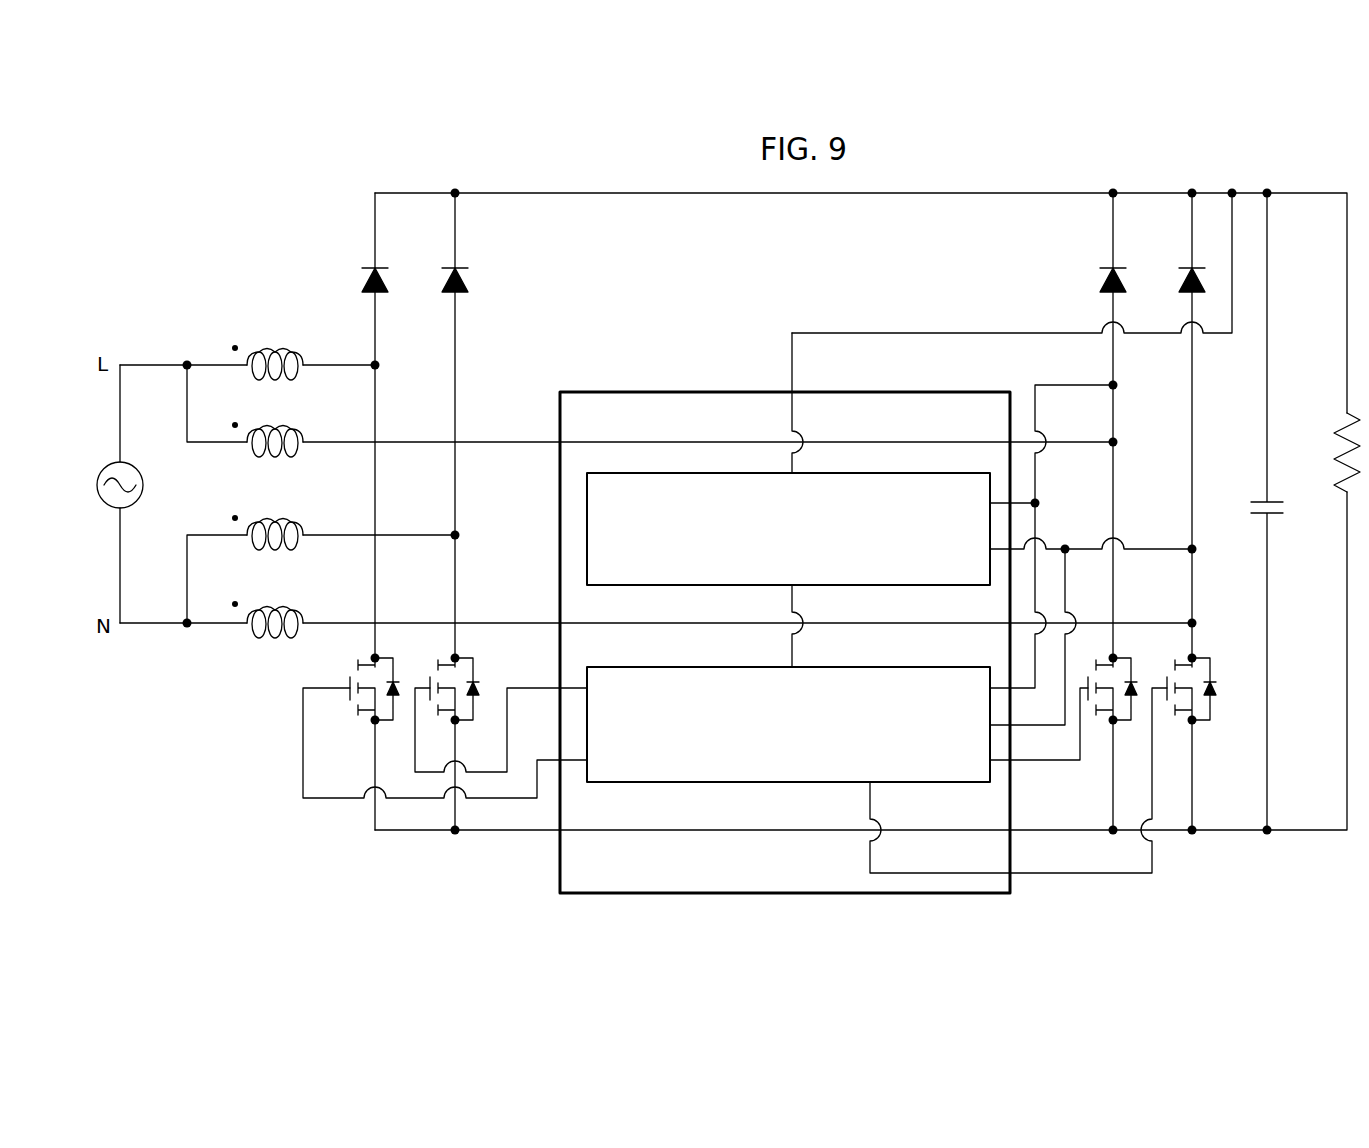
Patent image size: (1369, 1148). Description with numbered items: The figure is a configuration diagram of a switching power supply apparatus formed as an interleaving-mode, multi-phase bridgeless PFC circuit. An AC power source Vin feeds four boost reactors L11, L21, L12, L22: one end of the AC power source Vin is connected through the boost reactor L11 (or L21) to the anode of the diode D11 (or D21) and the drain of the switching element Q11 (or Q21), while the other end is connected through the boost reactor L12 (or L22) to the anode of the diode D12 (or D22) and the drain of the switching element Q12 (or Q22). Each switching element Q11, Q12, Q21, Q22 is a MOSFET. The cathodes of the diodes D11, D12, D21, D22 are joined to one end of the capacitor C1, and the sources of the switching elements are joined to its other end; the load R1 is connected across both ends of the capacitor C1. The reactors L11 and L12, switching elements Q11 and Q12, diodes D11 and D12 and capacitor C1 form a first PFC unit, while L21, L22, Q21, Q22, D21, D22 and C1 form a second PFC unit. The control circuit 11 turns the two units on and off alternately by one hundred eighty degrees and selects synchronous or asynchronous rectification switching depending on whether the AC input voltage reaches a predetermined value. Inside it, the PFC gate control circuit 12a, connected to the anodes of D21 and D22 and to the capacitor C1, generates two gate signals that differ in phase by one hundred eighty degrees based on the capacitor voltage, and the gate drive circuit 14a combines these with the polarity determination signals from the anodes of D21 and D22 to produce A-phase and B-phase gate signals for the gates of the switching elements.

The control circuit 11 is at (622, 390).
The PFC gate control circuit 12a is at (698, 587).
The gate drive circuit 14a is at (698, 784).
The AC power source Vin is at (101, 494).
The boost reactor L11 is at (290, 342).
The boost reactor L21 is at (290, 419).
The boost reactor L12 is at (290, 512).
The boost reactor L22 is at (290, 600).
The diode D11 is at (357, 268).
The diode D12 is at (438, 268).
The diode D21 is at (1095, 268).
The diode D22 is at (1176, 268).
The switching element Q11 is at (445, 726).
The switching element Q12 is at (501, 713).
The switching element Q21 is at (1072, 698).
The switching element Q22 is at (1052, 754).
The capacitor C1 is at (1252, 511).
The load R1 is at (1332, 452).